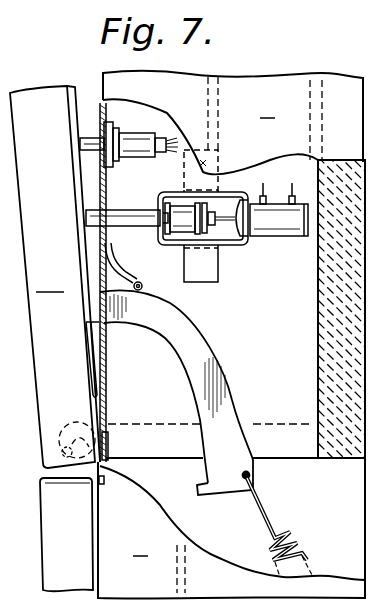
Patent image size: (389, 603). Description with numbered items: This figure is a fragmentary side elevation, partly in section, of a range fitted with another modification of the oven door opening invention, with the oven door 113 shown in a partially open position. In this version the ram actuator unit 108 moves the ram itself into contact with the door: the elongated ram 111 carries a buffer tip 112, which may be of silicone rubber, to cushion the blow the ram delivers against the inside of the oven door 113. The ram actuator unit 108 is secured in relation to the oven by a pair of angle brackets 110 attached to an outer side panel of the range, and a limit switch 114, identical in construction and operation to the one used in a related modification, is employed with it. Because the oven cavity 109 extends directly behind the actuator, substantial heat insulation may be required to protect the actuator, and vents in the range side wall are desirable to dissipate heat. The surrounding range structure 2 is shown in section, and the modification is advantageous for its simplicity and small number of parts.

The vehicle body 2 is at (231, 335).
The ram actuator unit 108 is at (275, 236).
The oven cavity 109 is at (101, 125).
The angle brackets 110 is at (210, 283).
The elongated ram 111 is at (138, 209).
The buffer tip 112 is at (88, 210).
The oven door 113 is at (55, 338).
The limit switch 114 is at (138, 134).